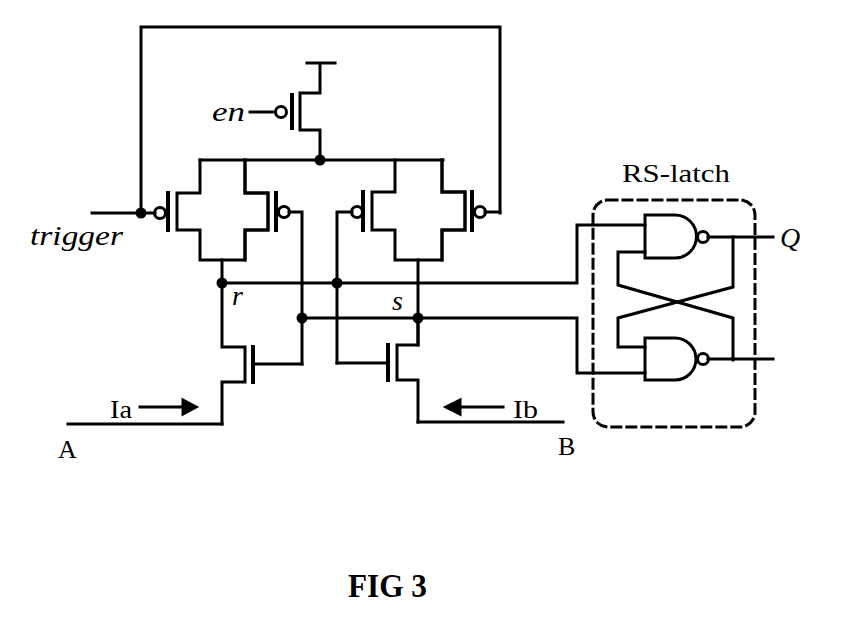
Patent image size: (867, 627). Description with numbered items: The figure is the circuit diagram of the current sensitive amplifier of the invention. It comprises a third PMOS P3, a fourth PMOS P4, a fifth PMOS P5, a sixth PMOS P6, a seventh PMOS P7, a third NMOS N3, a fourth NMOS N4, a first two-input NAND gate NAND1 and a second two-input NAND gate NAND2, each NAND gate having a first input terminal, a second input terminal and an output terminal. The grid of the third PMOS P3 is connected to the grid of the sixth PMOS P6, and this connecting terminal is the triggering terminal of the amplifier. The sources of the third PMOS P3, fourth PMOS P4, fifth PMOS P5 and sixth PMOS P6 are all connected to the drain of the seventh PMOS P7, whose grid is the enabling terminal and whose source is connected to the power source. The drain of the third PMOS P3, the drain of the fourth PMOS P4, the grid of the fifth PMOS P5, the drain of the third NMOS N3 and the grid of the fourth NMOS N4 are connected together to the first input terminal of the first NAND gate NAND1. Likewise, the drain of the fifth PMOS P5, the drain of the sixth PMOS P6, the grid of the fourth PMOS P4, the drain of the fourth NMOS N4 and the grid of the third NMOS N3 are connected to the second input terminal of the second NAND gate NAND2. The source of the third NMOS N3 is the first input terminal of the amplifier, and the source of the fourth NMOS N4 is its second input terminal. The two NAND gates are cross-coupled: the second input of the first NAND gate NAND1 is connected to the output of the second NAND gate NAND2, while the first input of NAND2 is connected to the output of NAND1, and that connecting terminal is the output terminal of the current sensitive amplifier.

The third PMOS P3 is at (212, 210).
The fourth PMOS P4 is at (265, 262).
The fifth PMOS P5 is at (401, 261).
The sixth PMOS P6 is at (462, 210).
The seventh PMOS P7 is at (307, 111).
The third NMOS N3 is at (249, 353).
The fourth NMOS N4 is at (392, 370).
The 1-2 input NAND gate NAND1 is at (695, 287).
The 2-2 input NAND gate NAND2 is at (695, 325).